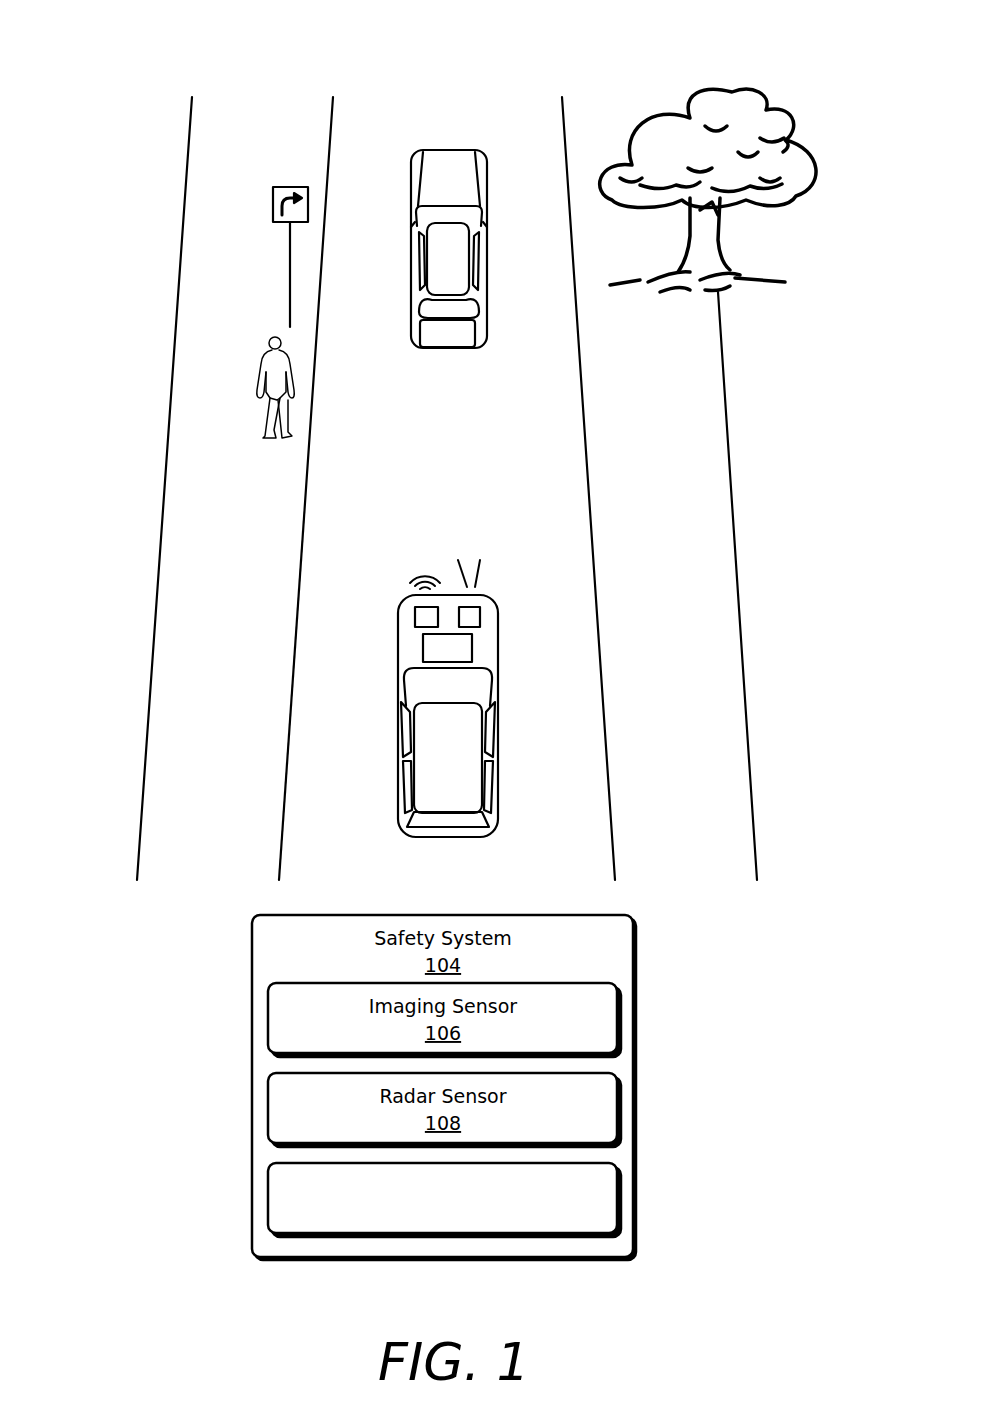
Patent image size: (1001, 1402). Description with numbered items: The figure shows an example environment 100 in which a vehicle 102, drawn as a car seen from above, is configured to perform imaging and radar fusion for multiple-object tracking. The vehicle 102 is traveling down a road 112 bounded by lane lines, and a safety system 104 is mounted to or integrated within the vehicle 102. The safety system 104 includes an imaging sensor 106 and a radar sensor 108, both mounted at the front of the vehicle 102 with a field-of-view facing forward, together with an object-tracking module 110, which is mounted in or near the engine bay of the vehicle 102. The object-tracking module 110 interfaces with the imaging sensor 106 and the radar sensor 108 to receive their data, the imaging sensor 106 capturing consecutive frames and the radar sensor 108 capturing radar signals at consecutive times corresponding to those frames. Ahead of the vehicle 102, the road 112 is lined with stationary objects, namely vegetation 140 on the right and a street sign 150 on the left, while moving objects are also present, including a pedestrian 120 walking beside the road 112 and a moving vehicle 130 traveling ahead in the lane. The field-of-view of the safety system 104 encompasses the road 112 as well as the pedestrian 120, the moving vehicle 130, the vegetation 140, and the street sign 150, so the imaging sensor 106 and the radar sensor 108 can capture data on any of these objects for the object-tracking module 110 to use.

The environment 100 is at (106, 44).
The vehicle 102 is at (435, 698).
The safety system 104 is at (472, 650).
The imaging sensor 106 is at (480, 612).
The radar sensor 108 is at (415, 608).
The object-tracking module 110 is at (444, 1200).
The road 112 is at (412, 449).
The pedestrian 120 is at (262, 460).
The moving vehicle 130 is at (446, 150).
The vegetation 140 is at (745, 104).
The street sign 150 is at (290, 187).